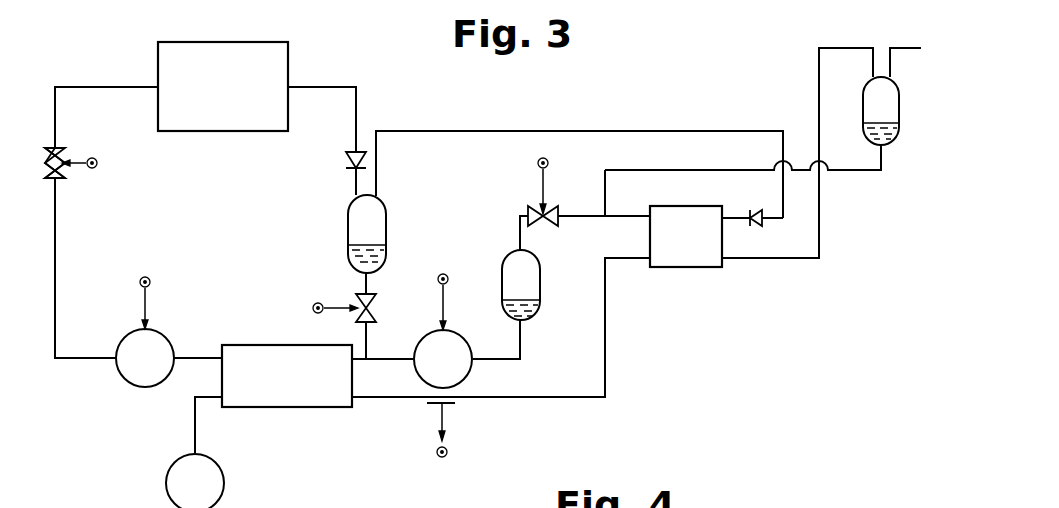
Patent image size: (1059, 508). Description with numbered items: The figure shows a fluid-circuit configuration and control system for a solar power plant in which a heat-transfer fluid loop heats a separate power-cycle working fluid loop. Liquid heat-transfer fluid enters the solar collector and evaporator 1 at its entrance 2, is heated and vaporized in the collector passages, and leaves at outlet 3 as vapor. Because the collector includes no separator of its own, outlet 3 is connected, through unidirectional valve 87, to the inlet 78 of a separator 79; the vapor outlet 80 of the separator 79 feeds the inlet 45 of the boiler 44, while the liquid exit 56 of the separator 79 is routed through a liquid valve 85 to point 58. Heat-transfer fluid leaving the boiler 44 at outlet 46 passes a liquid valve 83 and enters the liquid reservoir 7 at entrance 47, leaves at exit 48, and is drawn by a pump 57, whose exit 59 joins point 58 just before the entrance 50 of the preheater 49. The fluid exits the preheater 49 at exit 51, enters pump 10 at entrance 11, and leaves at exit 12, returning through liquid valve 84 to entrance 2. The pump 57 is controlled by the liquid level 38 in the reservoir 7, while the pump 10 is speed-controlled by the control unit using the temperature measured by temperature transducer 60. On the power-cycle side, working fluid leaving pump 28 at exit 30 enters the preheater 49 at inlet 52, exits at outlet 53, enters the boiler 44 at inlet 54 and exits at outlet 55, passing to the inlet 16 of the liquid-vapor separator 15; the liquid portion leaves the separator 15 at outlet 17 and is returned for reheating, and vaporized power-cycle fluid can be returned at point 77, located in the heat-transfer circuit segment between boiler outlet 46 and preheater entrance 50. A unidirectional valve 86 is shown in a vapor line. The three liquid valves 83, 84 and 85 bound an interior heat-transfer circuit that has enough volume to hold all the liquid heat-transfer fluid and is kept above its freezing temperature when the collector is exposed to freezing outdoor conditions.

The solar collector and evaporator 1 is at (196, 41).
The entrance of collector and evaporator 2 is at (157, 86).
The outlet of collector and evaporator 3 is at (290, 86).
The liquid reservoir 7 is at (503, 276).
The pump 10 is at (124, 340).
The pump entrance 11 is at (176, 364).
The pump exit 12 is at (118, 365).
The liquid-vapor separator 15 is at (893, 110).
The separator inlet 16 is at (870, 79).
The separator liquid outlet 17 is at (884, 147).
The pump 28 is at (226, 479).
The pump exit 30 is at (193, 451).
The liquid level 38 is at (534, 303).
The boiler 44 is at (690, 268).
The boiler inlet 45 is at (726, 215).
The boiler outlet 46 is at (650, 212).
The reservoir entrance 47 is at (521, 251).
The reservoir exit 48 is at (530, 318).
The preheater 49 is at (291, 344).
The preheater entrance 50 is at (360, 352).
The preheater exit 51 is at (221, 352).
The preheater inlet 52 is at (221, 405).
The preheater outlet 53 is at (354, 404).
The boiler inlet 54 is at (648, 262).
The boiler exit 55 is at (726, 265).
The separator liquid exit 56 is at (370, 275).
The pump 57 is at (430, 335).
The connection point 58 is at (369, 355).
The pump exit 59 is at (414, 364).
The temperature transducer 60 is at (458, 404).
The return point 77 is at (605, 215).
The separator inlet 78 is at (350, 199).
The separator 79 is at (348, 230).
The separator vapor outlet 80 is at (378, 192).
The liquid valve 83 is at (535, 210).
The liquid valve 84 is at (58, 176).
The liquid valve 85 is at (357, 298).
The unidirectional valve 86 is at (760, 224).
The unidirectional valve 87 is at (347, 161).